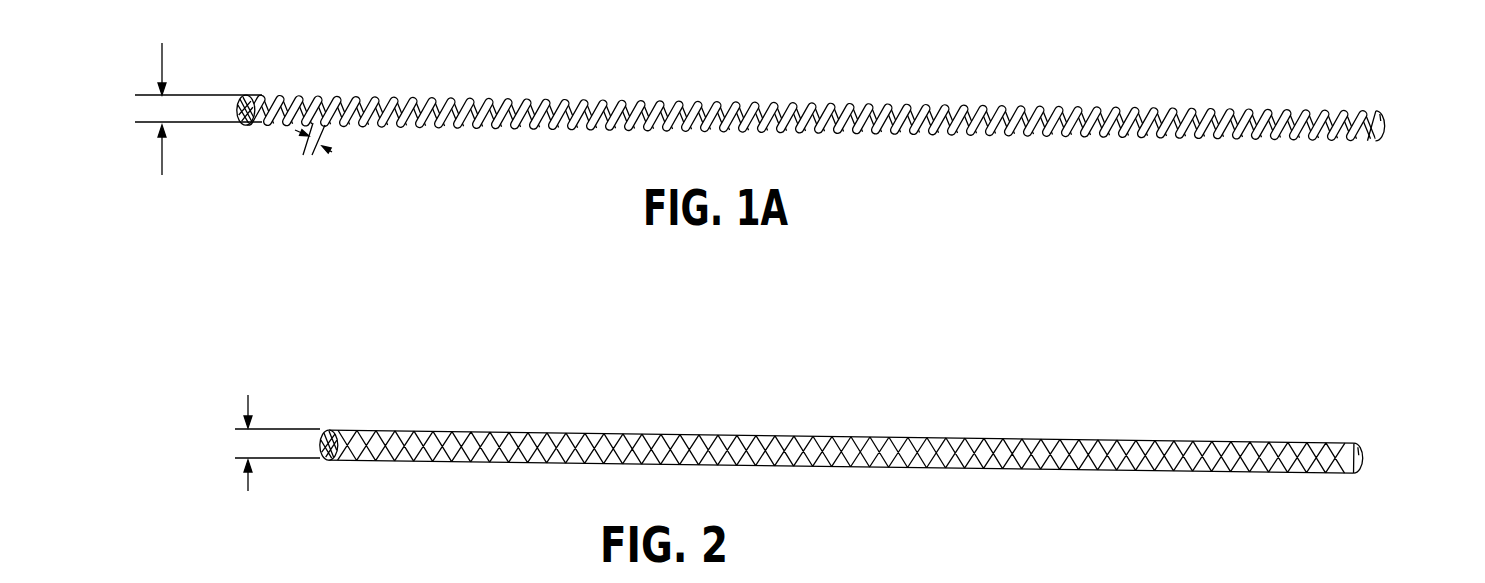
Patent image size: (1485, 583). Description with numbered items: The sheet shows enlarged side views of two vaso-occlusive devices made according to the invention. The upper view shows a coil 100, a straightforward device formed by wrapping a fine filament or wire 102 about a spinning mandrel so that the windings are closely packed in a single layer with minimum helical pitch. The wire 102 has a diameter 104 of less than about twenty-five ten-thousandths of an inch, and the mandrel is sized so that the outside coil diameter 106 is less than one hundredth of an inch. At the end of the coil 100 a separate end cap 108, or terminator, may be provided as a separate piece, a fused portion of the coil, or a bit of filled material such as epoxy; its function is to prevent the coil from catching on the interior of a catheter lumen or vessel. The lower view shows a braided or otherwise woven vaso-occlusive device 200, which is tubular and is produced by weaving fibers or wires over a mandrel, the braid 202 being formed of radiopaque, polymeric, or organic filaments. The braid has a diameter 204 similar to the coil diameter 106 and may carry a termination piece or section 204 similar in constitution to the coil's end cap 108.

In FIG. 1A, the coil 100 is at (810, 190).
In FIG. 1A, the wire 102 is at (335, 97).
In FIG. 1A, the diameter 104 is at (303, 155).
In FIG. 1A, the outside coil diameter 106 is at (198, 109).
In FIG. 1A, the end cap 108 is at (237, 123).
In FIG. 2, the braided vaso-occlusive device 200 is at (844, 412).
In FIG. 2, the braid 202 is at (497, 462).
In FIG. 2, the diameter 204 is at (1413, 445).